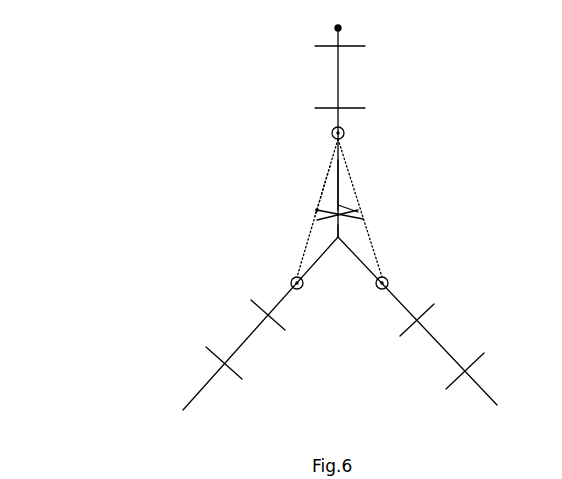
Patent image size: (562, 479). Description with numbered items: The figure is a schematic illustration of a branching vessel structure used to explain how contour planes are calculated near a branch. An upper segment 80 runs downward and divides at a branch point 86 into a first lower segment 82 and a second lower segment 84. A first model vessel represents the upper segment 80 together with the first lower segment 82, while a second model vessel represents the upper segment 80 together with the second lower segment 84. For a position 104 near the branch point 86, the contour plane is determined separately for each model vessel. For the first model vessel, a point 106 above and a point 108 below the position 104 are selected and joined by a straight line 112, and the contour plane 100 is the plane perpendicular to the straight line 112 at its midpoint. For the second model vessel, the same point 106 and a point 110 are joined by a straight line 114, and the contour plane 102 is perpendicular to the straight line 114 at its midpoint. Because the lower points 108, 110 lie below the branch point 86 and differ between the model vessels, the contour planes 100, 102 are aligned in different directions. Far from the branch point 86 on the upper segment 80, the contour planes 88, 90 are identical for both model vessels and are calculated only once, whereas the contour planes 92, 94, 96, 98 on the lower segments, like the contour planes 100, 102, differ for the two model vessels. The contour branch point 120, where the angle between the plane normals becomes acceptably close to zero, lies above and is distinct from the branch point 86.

The upper segment 80 is at (340, 86).
The first lower segment 82 is at (250, 338).
The second lower segment 84 is at (443, 347).
The branch point 86 is at (343, 236).
The contour plane 88 is at (325, 47).
The contour plane 90 is at (353, 108).
The contour plane 92 is at (256, 301).
The contour plane 94 is at (207, 350).
The contour plane 96 is at (428, 311).
The contour plane 98 is at (475, 358).
The contour plane 100 is at (317, 216).
The contour plane 102 is at (355, 215).
The position 104 is at (338, 200).
The point 106 is at (332, 133).
The point 108 is at (291, 283).
The point 110 is at (388, 281).
The straight line 112 is at (325, 188).
The straight line 114 is at (366, 238).
The contour branch point 120 is at (320, 197).